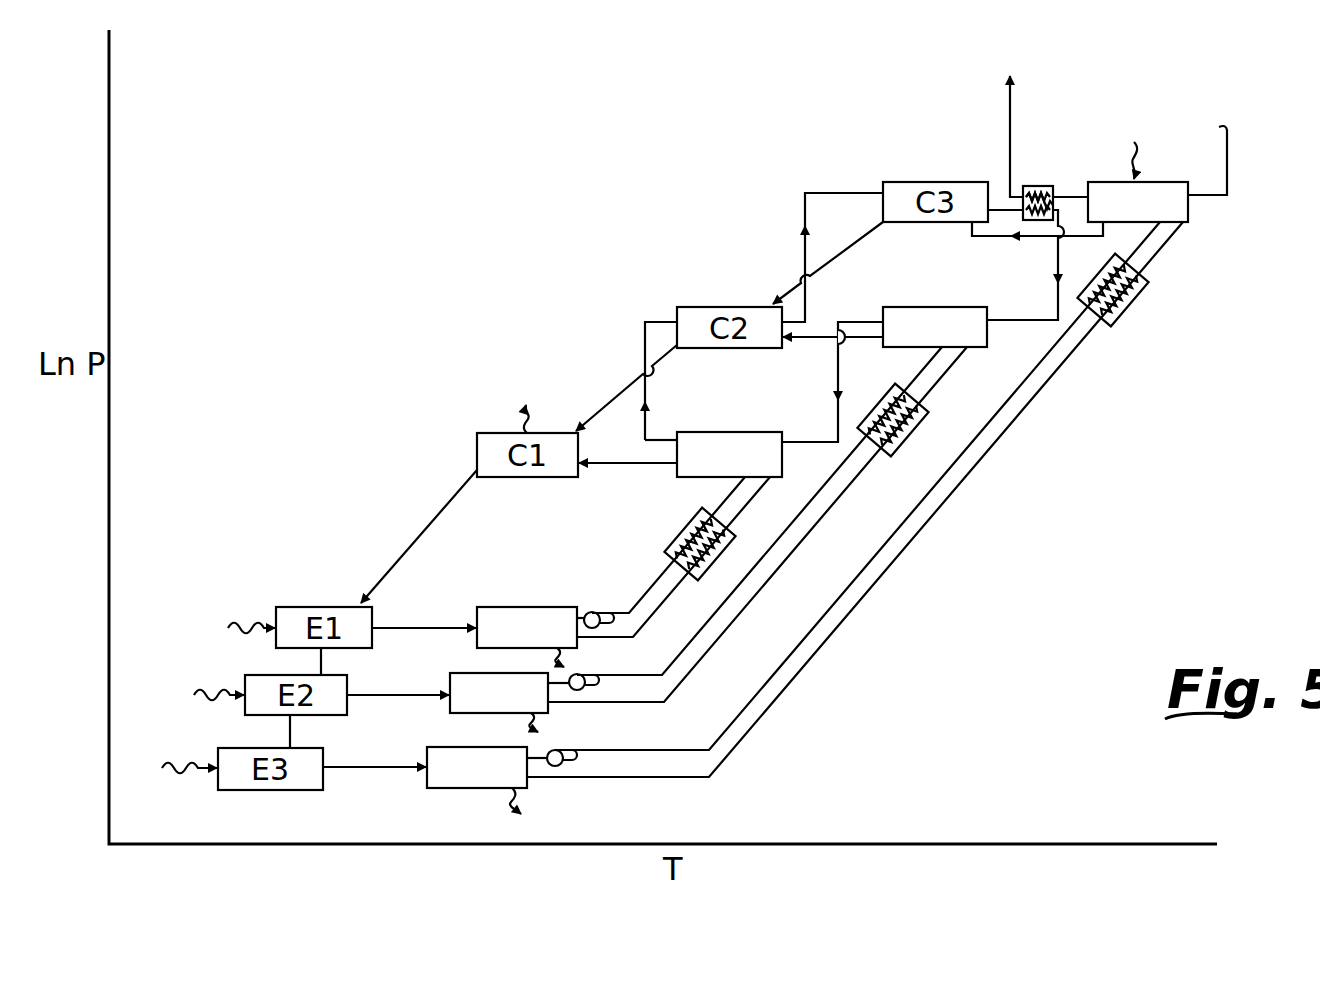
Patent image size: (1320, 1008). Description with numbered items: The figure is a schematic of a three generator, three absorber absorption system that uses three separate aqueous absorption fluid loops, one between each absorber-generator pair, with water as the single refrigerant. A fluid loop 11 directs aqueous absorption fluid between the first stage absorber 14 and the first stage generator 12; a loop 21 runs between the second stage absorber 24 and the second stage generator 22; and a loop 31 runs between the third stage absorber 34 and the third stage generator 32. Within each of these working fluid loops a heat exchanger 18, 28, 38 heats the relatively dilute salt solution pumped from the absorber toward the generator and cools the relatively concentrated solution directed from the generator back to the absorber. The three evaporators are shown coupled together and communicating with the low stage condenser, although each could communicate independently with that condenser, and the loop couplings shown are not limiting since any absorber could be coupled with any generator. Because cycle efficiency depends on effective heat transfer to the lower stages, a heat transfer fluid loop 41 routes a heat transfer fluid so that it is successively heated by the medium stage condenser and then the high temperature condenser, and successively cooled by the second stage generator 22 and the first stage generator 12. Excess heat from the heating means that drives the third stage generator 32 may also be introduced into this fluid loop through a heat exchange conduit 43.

The fluid loop 11 is at (629, 602).
The generator 12 is at (782, 458).
The first stage absorber 14 is at (520, 606).
The heat exchanger 18 is at (676, 533).
The loop 21 is at (707, 650).
The generator 22 is at (987, 340).
The second stage absorber 24 is at (456, 676).
The heat exchanger 28 is at (919, 412).
The loop 31 is at (797, 672).
The generator 32 is at (1188, 207).
The third stage absorber 34 is at (431, 750).
The heat exchanger 38 is at (1137, 292).
The heat transfer fluid loop 41 is at (805, 205).
The heat exchange conduit 43 is at (1010, 102).